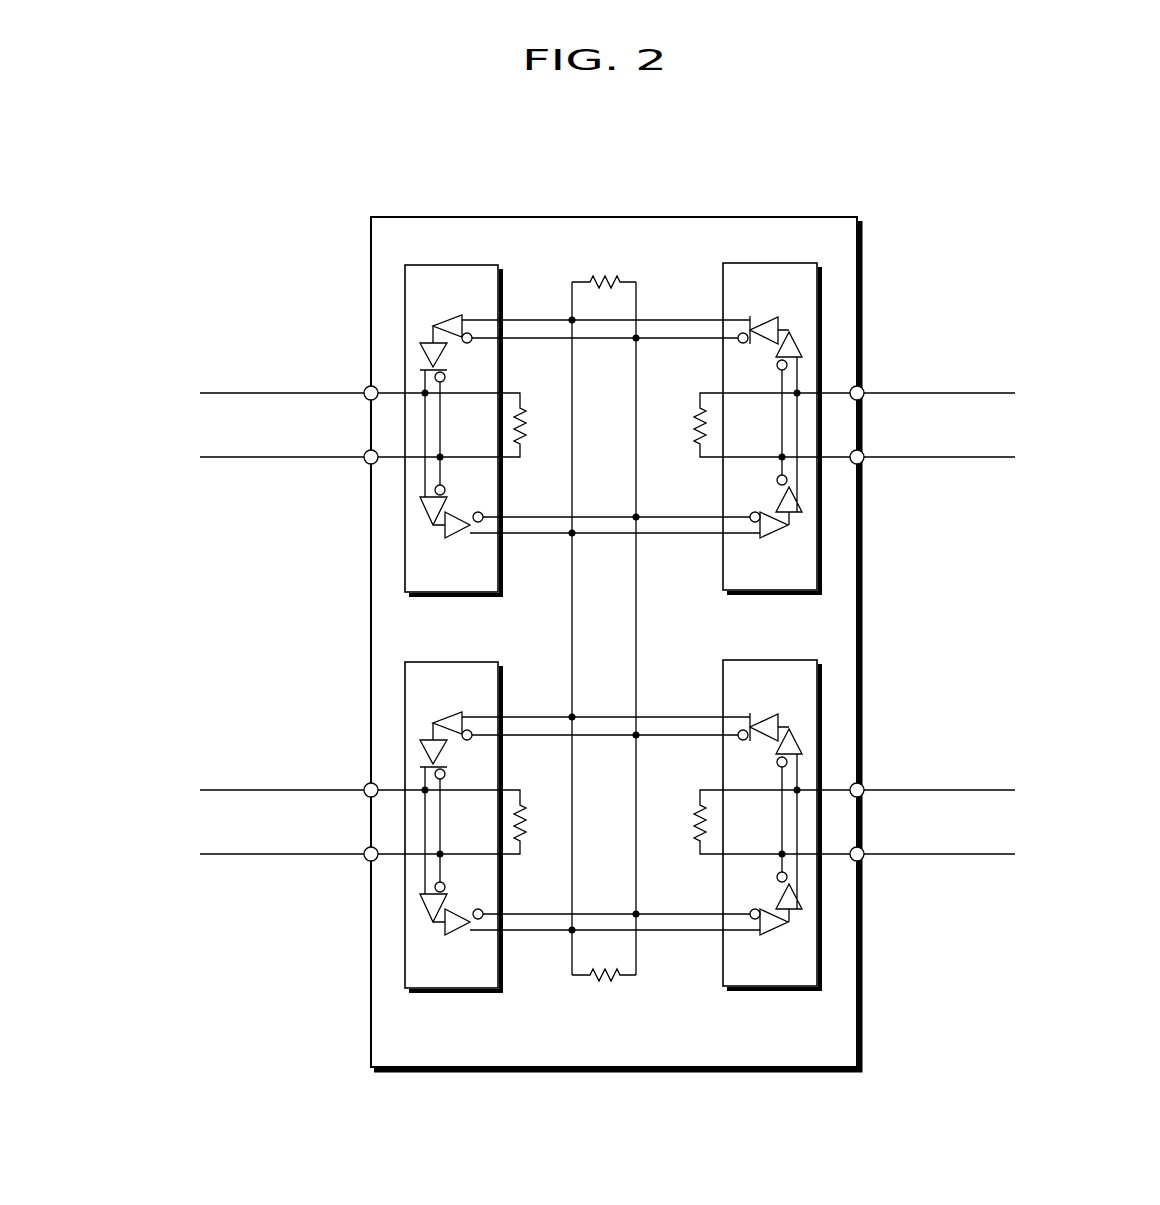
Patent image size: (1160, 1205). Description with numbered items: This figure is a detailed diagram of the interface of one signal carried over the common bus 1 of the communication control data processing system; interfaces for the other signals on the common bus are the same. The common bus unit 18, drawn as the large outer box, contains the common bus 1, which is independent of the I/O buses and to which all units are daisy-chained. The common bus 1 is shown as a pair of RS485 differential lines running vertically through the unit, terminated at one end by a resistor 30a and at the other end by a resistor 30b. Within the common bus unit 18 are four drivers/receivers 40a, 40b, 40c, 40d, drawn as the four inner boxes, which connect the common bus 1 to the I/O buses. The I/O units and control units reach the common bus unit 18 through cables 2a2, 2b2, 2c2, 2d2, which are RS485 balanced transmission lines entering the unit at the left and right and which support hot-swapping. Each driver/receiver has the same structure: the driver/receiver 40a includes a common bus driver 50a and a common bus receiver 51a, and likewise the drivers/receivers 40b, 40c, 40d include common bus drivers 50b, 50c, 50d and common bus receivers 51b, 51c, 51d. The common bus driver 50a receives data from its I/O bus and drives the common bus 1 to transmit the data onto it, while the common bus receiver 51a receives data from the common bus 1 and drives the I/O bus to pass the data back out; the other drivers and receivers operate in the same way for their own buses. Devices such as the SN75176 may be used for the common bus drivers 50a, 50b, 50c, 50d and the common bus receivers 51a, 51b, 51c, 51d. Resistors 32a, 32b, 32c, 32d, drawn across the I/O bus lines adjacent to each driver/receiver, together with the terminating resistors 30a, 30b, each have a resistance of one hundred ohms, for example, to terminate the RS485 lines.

The common bus unit 18 is at (644, 217).
The common bus 1 is at (641, 665).
The resistor 30a is at (619, 279).
The resistor 30b is at (614, 980).
The resistor 32a is at (520, 418).
The resistor 32b is at (698, 415).
The resistor 32c is at (522, 840).
The resistor 32d is at (698, 840).
The driver/receiver 40a is at (448, 265).
The driver/receiver 40b is at (785, 263).
The driver/receiver 40c is at (449, 988).
The driver/receiver 40d is at (779, 986).
The cable 2a2 is at (289, 392).
The cable 2b2 is at (954, 392).
The cable 2c2 is at (289, 789).
The cable 2d2 is at (954, 789).
The common bus driver 50a is at (417, 509).
The common bus driver 50b is at (795, 326).
The common bus driver 50c is at (417, 906).
The common bus driver 50d is at (795, 723).
The common bus receiver 51a is at (416, 333).
The common bus receiver 51b is at (797, 525).
The common bus receiver 51c is at (416, 730).
The common bus receiver 51d is at (797, 921).